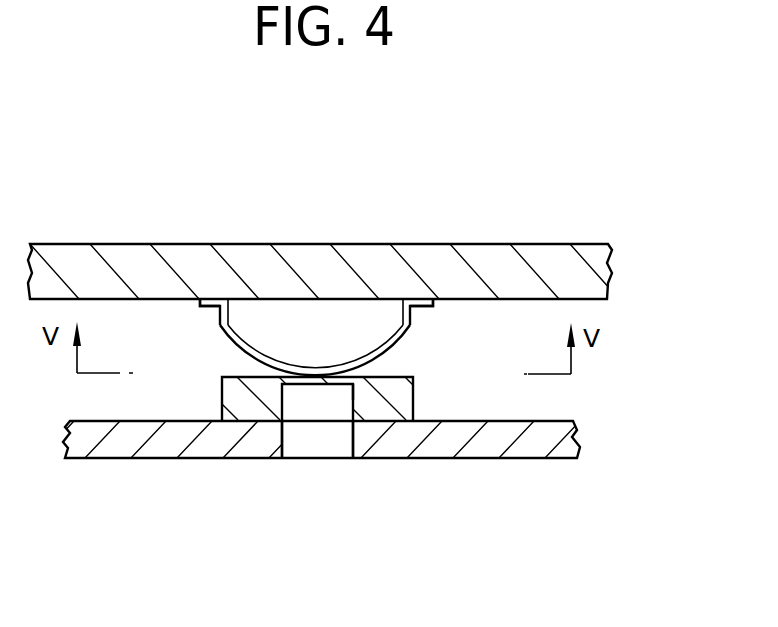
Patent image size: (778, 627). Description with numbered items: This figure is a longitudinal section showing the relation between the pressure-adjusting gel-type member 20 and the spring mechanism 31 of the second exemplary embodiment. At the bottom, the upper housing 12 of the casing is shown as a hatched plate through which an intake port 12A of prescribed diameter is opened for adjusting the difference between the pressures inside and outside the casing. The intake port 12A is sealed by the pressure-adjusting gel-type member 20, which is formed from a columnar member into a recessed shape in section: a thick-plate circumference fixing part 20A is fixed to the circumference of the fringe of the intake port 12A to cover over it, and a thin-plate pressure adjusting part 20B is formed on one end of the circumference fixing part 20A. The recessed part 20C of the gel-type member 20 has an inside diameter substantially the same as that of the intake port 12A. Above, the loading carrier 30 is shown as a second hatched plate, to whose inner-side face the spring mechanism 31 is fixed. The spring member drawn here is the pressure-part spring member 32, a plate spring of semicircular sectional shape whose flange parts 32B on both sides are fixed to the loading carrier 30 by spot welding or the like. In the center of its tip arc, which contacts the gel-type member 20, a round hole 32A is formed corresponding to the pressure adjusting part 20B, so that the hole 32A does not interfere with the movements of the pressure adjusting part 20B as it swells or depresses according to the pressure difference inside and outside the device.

The upper housing 12 is at (309, 486).
The intake port 12A is at (352, 428).
The pressure-adjusting gel-type member 20 is at (328, 474).
The circumference fixing part 20A is at (233, 392).
The pressure adjusting part 20B is at (298, 385).
The recessed part 20C is at (348, 402).
The loading carrier 30 is at (542, 260).
The spring mechanism 31 is at (393, 315).
The pressure-part spring member 32 is at (284, 254).
The round hole 32A is at (345, 356).
The flange parts 32B is at (212, 305).